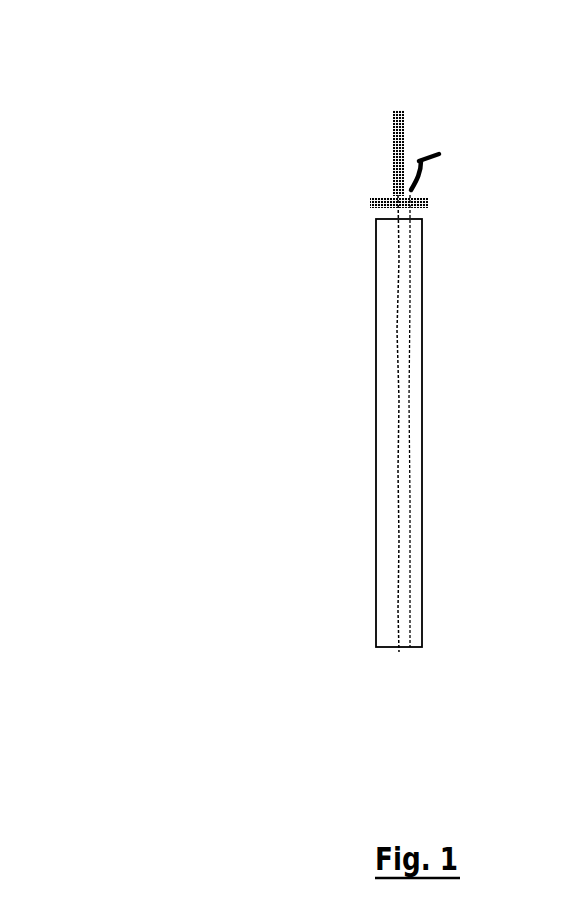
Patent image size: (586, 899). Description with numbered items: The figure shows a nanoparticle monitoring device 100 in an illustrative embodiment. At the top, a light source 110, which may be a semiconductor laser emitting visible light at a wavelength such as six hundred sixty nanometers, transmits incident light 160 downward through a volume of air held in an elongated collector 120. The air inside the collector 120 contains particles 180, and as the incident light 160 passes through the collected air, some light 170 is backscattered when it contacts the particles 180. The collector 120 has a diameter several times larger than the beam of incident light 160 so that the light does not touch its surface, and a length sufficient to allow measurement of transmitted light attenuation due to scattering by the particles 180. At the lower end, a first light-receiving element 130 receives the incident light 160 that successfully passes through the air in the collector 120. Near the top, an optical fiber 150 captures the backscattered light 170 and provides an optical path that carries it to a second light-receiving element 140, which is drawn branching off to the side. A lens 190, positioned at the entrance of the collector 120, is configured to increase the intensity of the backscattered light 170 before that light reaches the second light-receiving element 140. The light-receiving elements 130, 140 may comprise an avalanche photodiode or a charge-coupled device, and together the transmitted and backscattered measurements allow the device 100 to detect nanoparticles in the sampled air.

The nanoparticle monitoring device 100 is at (187, 85).
The light source 110 is at (391, 150).
The collector 120 is at (375, 432).
The first light-receiving element 130 is at (410, 690).
The second light-receiving element 140 is at (476, 148).
The optical fiber 150 is at (419, 161).
The incident light 160 is at (398, 525).
The backscattered light 170 is at (408, 330).
The particles 180 is at (408, 472).
The lens 190 is at (366, 203).